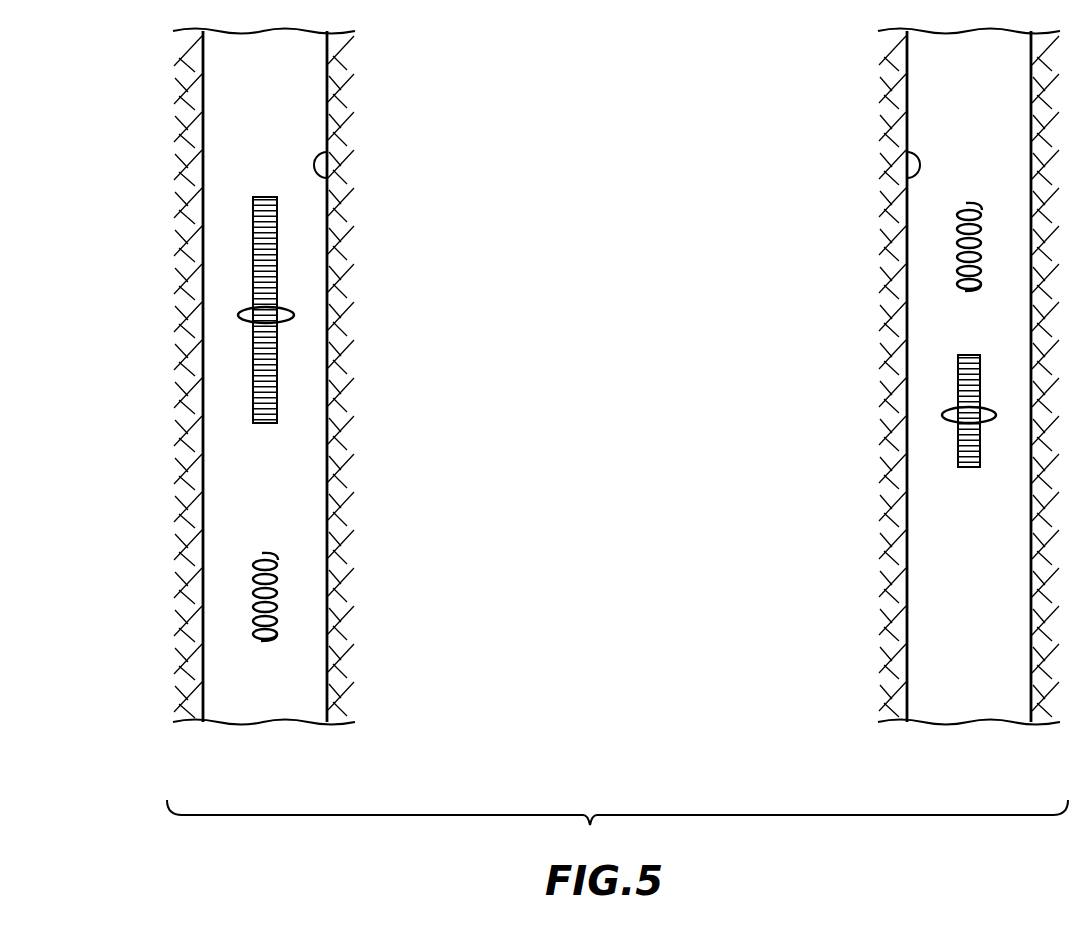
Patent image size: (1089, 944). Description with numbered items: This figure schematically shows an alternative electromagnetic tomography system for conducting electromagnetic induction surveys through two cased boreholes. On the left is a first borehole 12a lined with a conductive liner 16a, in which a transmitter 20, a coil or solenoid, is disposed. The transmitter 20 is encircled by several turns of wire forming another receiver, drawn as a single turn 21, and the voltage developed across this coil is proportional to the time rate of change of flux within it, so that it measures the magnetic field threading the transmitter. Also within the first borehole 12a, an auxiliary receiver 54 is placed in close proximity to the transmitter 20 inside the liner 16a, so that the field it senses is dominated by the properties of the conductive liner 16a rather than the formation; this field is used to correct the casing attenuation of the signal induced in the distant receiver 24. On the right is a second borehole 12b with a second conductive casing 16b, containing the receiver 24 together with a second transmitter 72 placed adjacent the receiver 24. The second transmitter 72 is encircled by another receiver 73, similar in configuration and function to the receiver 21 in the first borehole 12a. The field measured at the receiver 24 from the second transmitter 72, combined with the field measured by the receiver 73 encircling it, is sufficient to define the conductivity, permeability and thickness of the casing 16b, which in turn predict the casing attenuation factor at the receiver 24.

The borehole 12a is at (297, 122).
The borehole 12b is at (937, 120).
The conductive liner 16a is at (338, 154).
The second conductive casing 16b is at (918, 154).
The transmitter 20 is at (253, 255).
The single turn 21 is at (238, 316).
The auxiliary receiver 54 is at (255, 565).
The receiver 24 is at (957, 243).
The second transmitter 72 is at (958, 382).
The receiver 73 is at (942, 415).